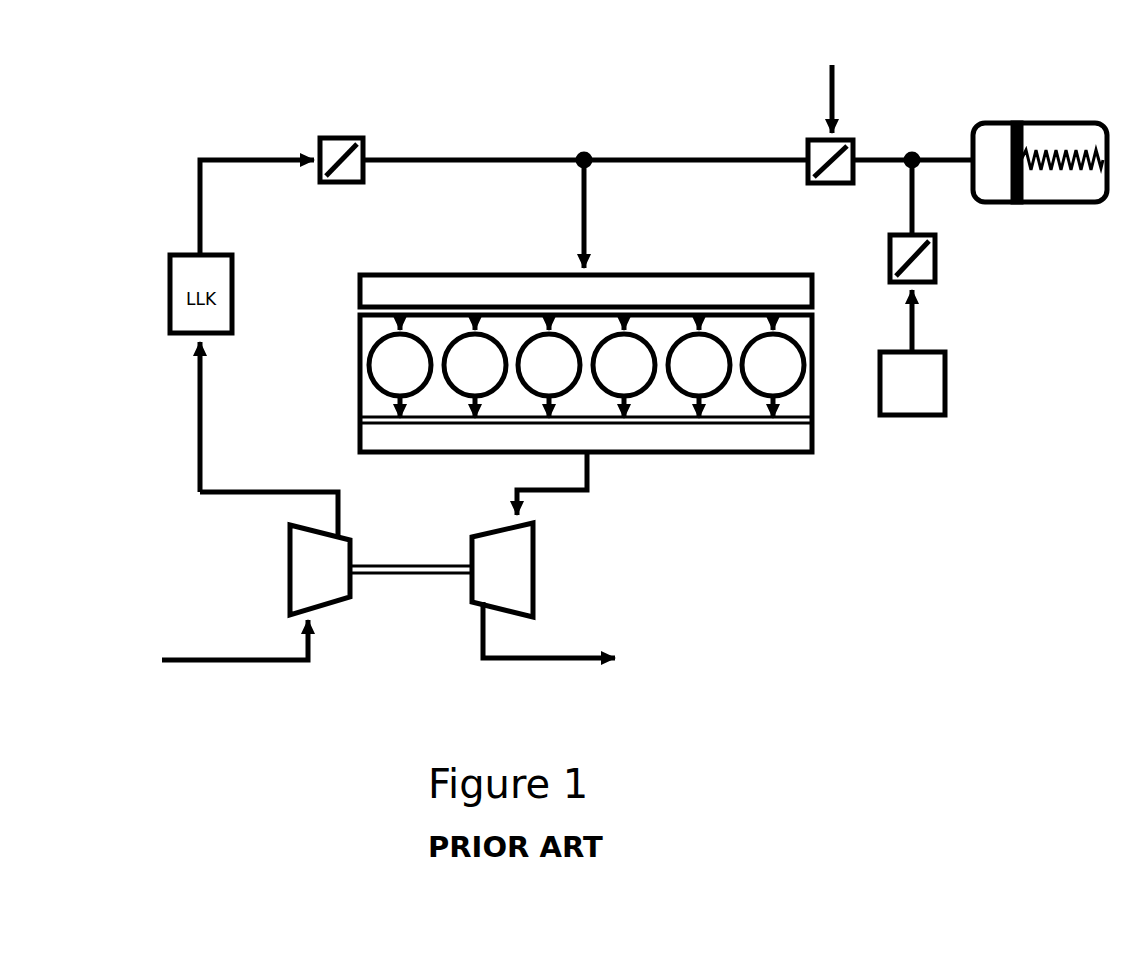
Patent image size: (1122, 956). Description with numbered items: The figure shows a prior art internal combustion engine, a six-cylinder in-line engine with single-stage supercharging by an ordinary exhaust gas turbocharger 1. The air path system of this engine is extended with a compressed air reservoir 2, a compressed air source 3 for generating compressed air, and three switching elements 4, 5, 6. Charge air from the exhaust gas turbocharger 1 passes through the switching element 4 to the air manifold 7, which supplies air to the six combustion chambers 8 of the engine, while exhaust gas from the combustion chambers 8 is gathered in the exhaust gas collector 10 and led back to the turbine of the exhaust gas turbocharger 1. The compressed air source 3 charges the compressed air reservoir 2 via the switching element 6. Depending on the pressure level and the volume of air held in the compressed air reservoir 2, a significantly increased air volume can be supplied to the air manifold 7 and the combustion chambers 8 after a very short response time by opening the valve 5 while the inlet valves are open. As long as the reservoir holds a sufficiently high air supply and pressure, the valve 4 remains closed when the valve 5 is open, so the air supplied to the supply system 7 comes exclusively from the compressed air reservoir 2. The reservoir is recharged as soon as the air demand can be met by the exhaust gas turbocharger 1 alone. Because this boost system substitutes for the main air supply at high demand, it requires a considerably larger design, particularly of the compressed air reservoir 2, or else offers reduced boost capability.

The exhaust gas turbocharger 1 is at (258, 572).
The compressed air reservoir 2 is at (1036, 105).
The compressed air source 3 is at (964, 400).
The switching element 4 is at (335, 117).
The switching element 5 is at (795, 131).
The switching element 6 is at (939, 259).
The air manifold 7 is at (586, 291).
The combustion chamber 8 is at (700, 367).
The exhaust gas collector 10 is at (586, 383).